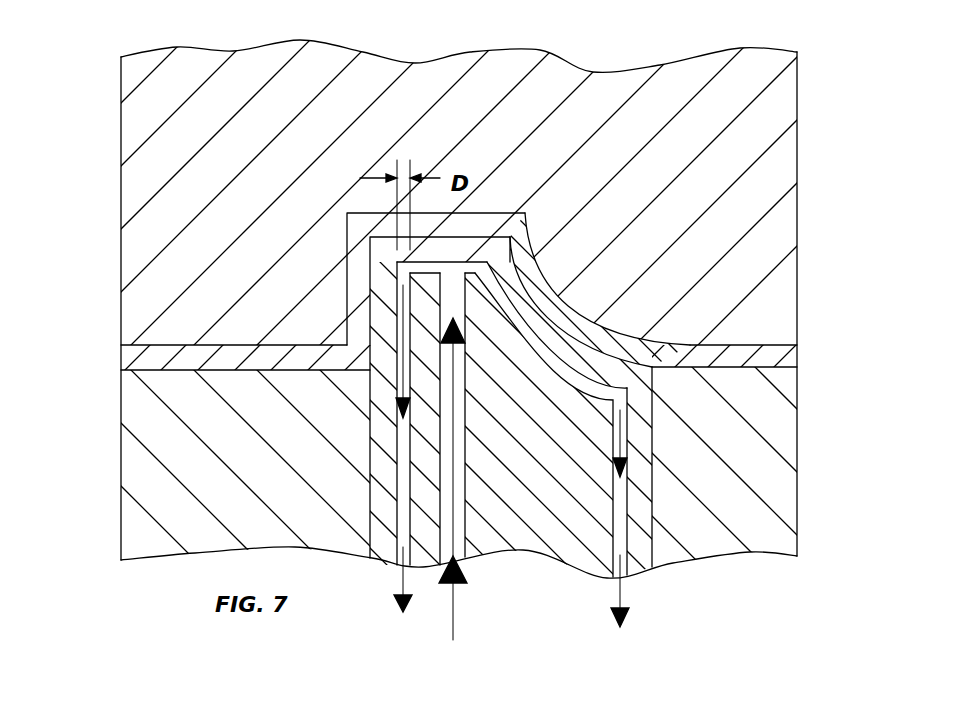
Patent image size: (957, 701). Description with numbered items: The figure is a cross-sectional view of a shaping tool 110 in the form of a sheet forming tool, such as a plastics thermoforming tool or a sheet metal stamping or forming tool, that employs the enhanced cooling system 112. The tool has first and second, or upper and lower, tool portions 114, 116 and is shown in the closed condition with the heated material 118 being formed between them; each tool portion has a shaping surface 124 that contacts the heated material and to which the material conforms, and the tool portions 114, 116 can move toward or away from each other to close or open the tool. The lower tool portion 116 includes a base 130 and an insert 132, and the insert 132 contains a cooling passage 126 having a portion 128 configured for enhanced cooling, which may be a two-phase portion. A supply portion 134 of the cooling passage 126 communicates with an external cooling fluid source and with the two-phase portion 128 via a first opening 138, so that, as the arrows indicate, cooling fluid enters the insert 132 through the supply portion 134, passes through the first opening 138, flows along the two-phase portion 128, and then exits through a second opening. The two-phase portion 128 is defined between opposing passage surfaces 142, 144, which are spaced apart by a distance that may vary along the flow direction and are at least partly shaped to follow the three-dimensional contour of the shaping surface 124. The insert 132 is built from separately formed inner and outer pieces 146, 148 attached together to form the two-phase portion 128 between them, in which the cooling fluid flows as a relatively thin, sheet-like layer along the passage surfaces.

The shaping tool 110 is at (80, 132).
The cooling system 112 is at (470, 558).
The first tool portion 114 is at (745, 113).
The second tool portion 116 is at (767, 437).
The heated material 118 is at (787, 362).
The shaping surface 124 is at (370, 252).
The cooling passage 126 is at (452, 426).
The two-phase portion 128 is at (403, 312).
The base 130 is at (141, 451).
The insert 132 is at (647, 552).
The supply portion 134 is at (455, 490).
The first opening 138 is at (477, 268).
The passage surface 142 is at (572, 326).
The passage surface 144 is at (502, 313).
The inner piece 146 is at (418, 497).
The outer piece 148 is at (383, 428).